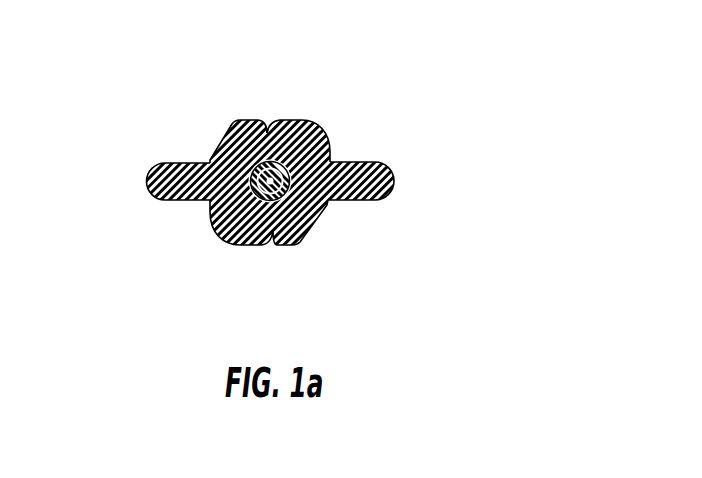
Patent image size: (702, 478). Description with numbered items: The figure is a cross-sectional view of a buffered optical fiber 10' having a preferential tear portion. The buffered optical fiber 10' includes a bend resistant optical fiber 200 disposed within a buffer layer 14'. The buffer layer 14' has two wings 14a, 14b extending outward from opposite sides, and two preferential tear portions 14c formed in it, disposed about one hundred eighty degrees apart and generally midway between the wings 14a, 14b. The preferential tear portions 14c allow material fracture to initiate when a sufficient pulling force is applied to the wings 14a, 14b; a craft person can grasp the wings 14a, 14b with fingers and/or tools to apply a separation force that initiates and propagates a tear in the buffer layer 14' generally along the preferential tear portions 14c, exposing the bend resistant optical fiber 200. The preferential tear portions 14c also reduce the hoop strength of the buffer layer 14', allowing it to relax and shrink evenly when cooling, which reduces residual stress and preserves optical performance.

The buffered optical fiber 10' is at (54, 110).
The buffer layer 14' is at (265, 208).
The wing 14a is at (393, 177).
The wing 14b is at (180, 203).
The preferential tear portion 14c is at (264, 126).
The bend resistant optical fiber 200 is at (317, 137).